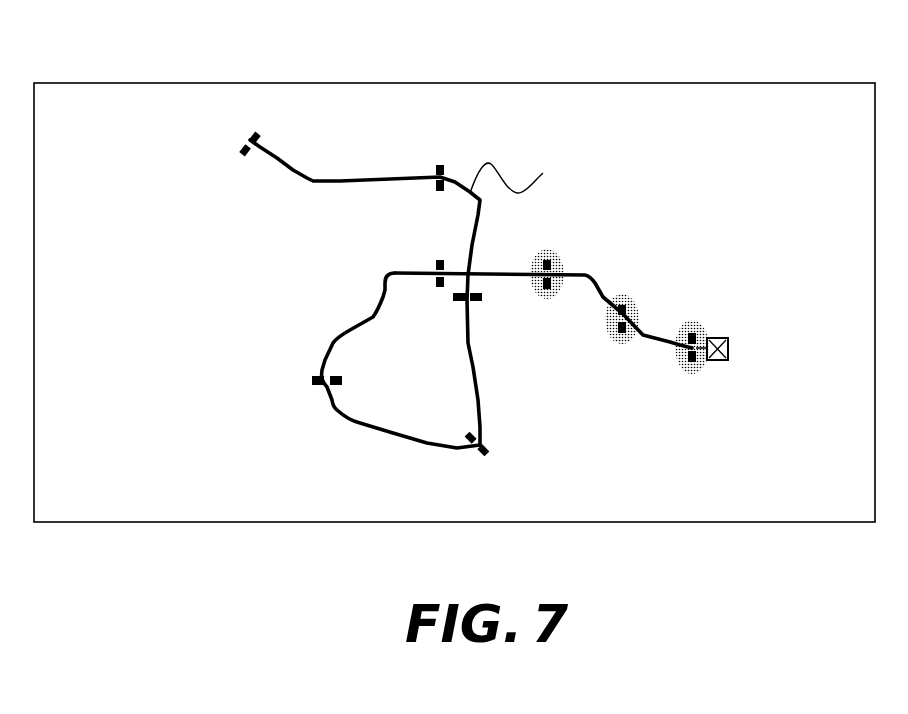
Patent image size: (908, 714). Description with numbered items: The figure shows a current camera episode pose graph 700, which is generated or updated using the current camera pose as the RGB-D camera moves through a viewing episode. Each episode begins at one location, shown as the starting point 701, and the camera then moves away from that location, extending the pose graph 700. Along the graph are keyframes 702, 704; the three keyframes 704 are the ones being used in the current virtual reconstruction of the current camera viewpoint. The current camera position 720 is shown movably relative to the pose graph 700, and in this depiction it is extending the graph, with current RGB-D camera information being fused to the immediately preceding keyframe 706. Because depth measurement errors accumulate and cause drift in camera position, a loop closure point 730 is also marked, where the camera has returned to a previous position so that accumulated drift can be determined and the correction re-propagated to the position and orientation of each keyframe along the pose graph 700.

The pose graph 700 is at (522, 166).
The starting point 701 is at (274, 131).
The keyframes 702 is at (245, 143).
The keyframes 704 is at (686, 316).
The immediately preceding keyframe 706 is at (698, 318).
The current camera position 720 is at (719, 331).
The loop closure point 730 is at (482, 283).